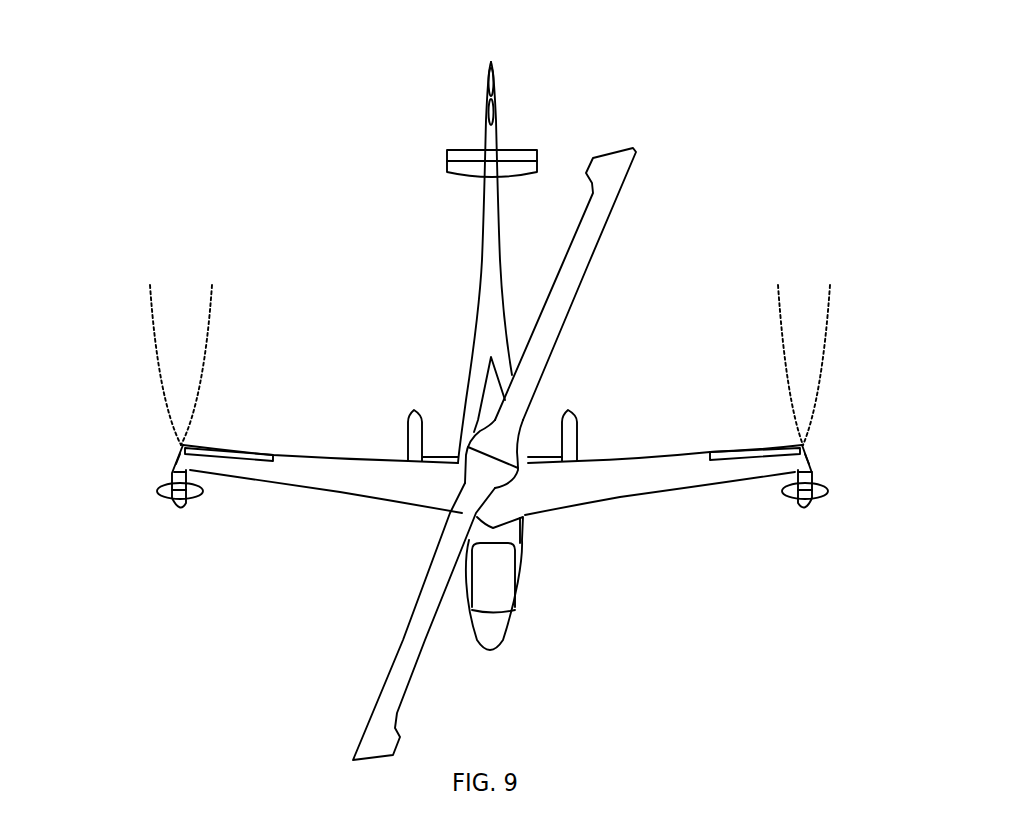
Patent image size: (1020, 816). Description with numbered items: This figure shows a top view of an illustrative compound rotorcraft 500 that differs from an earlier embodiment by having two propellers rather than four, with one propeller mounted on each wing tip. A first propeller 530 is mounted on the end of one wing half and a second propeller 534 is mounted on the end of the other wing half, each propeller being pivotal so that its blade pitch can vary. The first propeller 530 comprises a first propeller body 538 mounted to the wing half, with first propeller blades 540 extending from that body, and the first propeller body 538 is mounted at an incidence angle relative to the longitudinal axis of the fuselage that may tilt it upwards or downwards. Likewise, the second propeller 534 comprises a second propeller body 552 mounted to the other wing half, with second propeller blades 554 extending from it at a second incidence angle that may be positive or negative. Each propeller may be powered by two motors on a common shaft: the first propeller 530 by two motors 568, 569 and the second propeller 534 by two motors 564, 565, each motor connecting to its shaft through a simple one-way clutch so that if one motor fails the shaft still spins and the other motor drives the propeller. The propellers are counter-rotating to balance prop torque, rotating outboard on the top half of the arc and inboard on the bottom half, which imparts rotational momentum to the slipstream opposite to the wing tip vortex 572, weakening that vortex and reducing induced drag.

The compound rotorcraft 500 is at (698, 203).
The first propeller 530 is at (180, 512).
The second propeller 534 is at (805, 515).
The first propeller body 538 is at (190, 478).
The first propeller blades 540 is at (150, 497).
The second propeller body 552 is at (818, 480).
The second propeller blades 554 is at (832, 495).
The motor 564 is at (172, 468).
The motor 565 is at (168, 478).
The motor 568 is at (805, 465).
The motor 569 is at (812, 465).
The wing tip vortex 572 is at (158, 372).